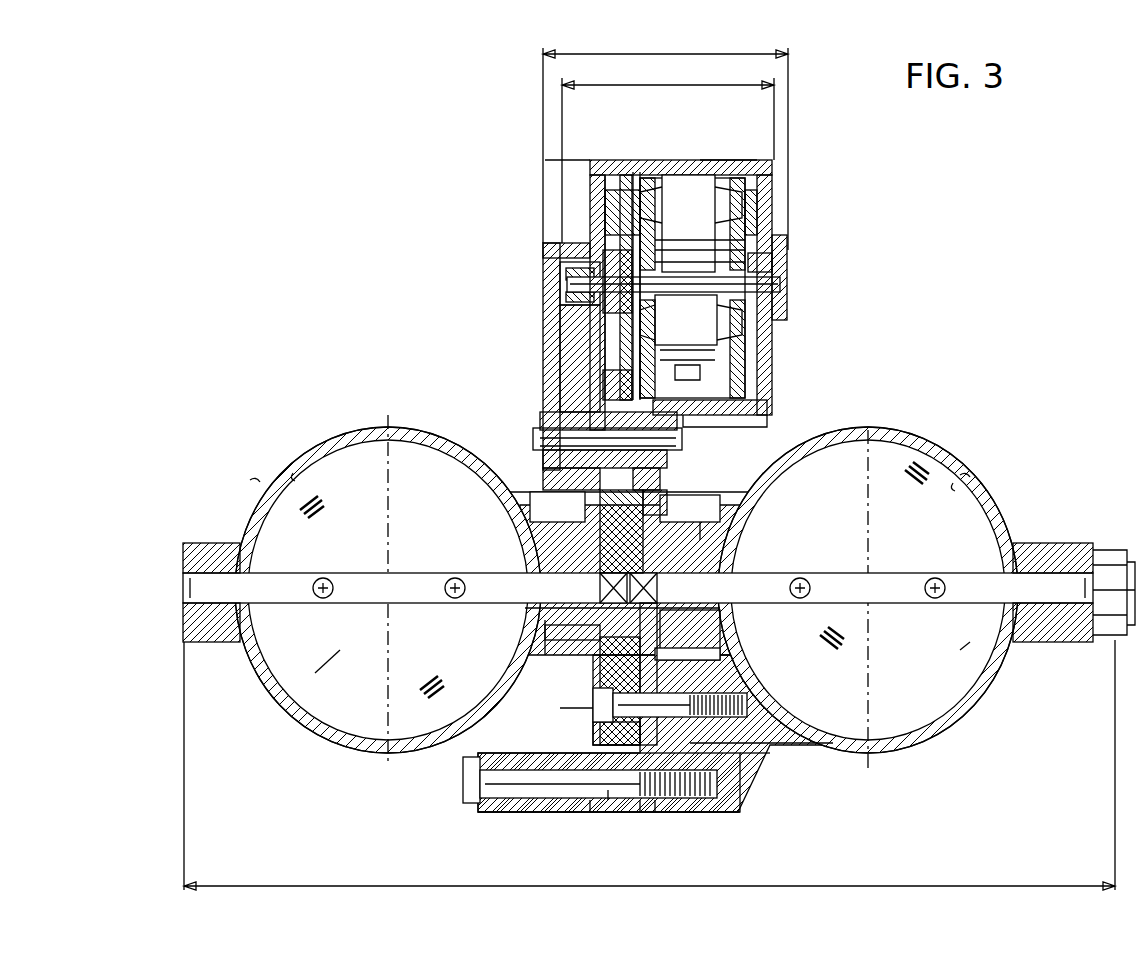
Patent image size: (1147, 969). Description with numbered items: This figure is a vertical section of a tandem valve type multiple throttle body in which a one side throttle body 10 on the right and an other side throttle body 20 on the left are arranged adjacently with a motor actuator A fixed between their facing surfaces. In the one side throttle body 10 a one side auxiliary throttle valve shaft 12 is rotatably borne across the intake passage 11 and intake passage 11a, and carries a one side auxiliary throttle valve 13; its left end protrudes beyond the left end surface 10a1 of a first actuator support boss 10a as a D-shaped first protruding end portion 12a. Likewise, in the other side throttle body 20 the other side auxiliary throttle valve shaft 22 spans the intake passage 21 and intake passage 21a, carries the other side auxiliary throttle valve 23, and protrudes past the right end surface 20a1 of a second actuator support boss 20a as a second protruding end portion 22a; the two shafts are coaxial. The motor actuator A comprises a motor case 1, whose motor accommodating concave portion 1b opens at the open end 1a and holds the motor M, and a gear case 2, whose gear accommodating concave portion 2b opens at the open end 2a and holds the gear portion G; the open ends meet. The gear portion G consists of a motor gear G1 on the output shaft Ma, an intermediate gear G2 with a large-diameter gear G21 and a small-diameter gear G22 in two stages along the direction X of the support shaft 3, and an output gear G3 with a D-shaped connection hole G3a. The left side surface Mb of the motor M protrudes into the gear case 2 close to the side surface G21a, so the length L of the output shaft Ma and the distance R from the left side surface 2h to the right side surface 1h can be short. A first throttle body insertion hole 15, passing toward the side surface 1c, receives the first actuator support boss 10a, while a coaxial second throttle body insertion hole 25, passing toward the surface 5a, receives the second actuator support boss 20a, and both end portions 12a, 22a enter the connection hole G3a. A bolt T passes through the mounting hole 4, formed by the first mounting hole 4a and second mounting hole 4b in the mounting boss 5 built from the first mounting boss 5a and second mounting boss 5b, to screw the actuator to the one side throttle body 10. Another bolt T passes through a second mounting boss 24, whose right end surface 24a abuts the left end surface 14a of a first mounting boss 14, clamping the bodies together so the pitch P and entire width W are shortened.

The motor case 1 is at (760, 160).
The open end of the motor case 1a is at (665, 795).
The motor accommodating concave portion 1b is at (700, 160).
The opposite side surface of the motor case 1c is at (720, 652).
The right side surface of the motor case 1h is at (790, 245).
The gear case 2 is at (595, 160).
The open end of the gear case 2a is at (608, 800).
The gear accommodating concave portion 2b is at (543, 342).
The left side surface of the gear case 2h is at (543, 280).
The support shaft 3 is at (543, 410).
The mounting hole 4 is at (593, 725).
The first mounting hole 4a is at (572, 741).
The second mounting hole 4b is at (775, 705).
The mounting boss 5 is at (590, 800).
The first mounting boss 5a is at (558, 837).
The second mounting boss 5b is at (750, 760).
The one side throttle body 10 is at (925, 440).
The first actuator support boss 10a is at (720, 535).
The left end surface of the first actuator support boss 10a1 is at (720, 555).
The intake passage 11 is at (953, 483).
The intake passage 11a is at (1022, 462).
The one side auxiliary throttle valve shaft 12 is at (895, 572).
The first protruding end portion 12a is at (657, 592).
The one side auxiliary throttle valve 13 is at (960, 650).
The first mounting boss 14 is at (745, 790).
The left end surface of the first mounting boss 14a is at (655, 812).
The first throttle body insertion hole 15 is at (695, 625).
The other side throttle body 20 is at (330, 442).
The second actuator support boss 20a is at (545, 620).
The right end surface of the second actuator support boss 20a1 is at (545, 545).
The intake passage 21 is at (293, 473).
The intake passage 21a is at (221, 449).
The other side auxiliary throttle valve shaft 22 is at (372, 580).
The second protruding end portion 22a is at (600, 592).
The other side auxiliary throttle valve 23 is at (315, 673).
The second mounting boss 24 is at (505, 815).
The right end surface of the second mounting boss 24a is at (645, 800).
The second throttle body insertion hole 25 is at (562, 708).
The motor actuator A is at (616, 125).
The gear portion G is at (583, 229).
The motor gear G1 is at (547, 267).
The intermediate gear G2 is at (543, 325).
The large-diameter gear G21 is at (518, 283).
The side surface of the large-diameter gear G21a is at (543, 368).
The small-diameter gear G22 is at (660, 470).
The output gear G3 is at (655, 520).
The connection hole G3a is at (565, 640).
The motor M is at (692, 286).
The output shaft Ma is at (691, 337).
The left side surface of the motor Mb is at (567, 262).
The bolt T is at (755, 700).
The longitudinal direction X- X is at (606, 442).
The pitch P is at (629, 480).
The distance R is at (665, 137).
The length L is at (668, 149).
The entire width W is at (649, 765).